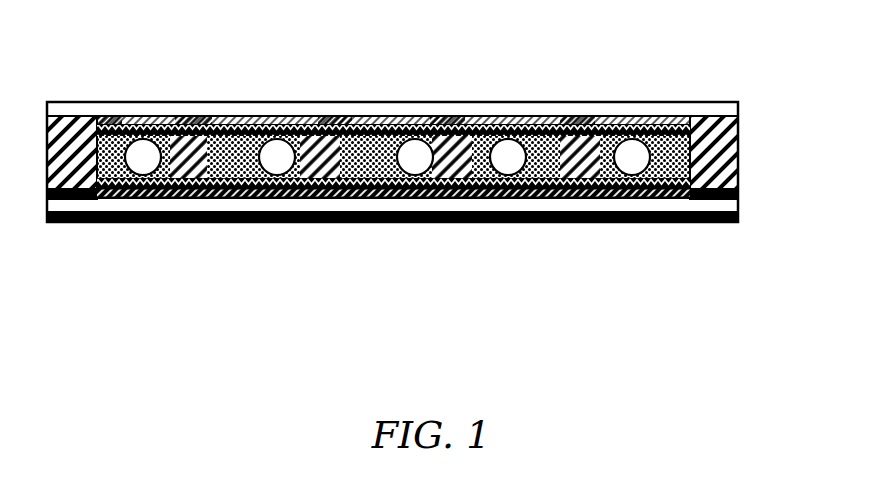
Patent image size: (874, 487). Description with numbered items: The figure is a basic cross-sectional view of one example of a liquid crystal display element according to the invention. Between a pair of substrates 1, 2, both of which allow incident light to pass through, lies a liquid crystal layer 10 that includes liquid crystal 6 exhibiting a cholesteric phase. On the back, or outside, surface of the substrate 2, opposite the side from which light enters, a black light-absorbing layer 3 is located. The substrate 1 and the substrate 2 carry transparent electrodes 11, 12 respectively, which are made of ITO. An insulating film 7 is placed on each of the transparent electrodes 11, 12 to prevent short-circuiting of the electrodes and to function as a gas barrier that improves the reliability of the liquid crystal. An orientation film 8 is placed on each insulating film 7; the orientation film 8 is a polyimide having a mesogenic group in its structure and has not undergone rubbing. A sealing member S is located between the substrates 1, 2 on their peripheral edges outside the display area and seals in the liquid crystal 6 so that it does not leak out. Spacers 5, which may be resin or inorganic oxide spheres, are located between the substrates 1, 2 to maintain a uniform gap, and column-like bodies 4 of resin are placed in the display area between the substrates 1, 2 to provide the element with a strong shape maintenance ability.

The substrate 1 is at (126, 110).
The substrate 2 is at (130, 202).
The black light-absorbing layer 3 is at (183, 222).
The column-like bodies 4 is at (198, 122).
The spacers 5 is at (278, 172).
The liquid crystal 6 is at (250, 142).
The insulating film 7 is at (483, 186).
The orientation film 8 is at (593, 150).
The liquid crystal layer 10 is at (427, 162).
The transparent electrode 11 is at (368, 120).
The transparent electrode 12 is at (417, 172).
The sealing member S is at (714, 155).